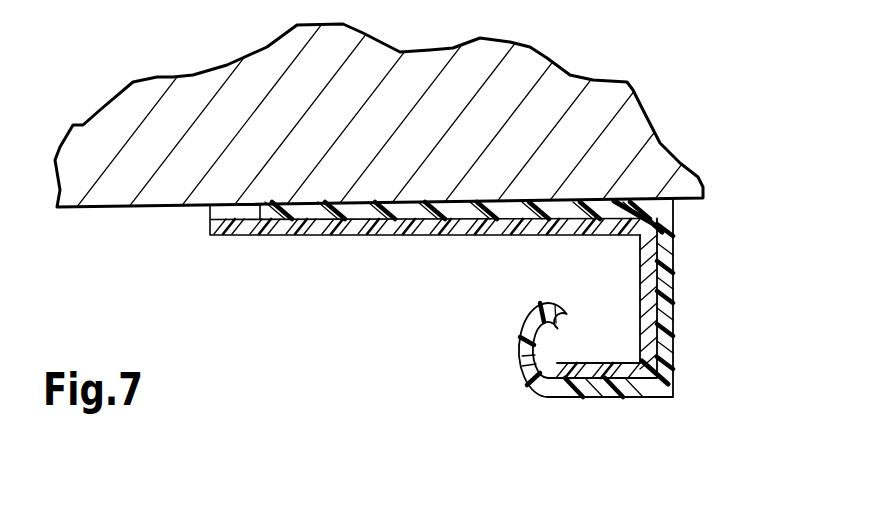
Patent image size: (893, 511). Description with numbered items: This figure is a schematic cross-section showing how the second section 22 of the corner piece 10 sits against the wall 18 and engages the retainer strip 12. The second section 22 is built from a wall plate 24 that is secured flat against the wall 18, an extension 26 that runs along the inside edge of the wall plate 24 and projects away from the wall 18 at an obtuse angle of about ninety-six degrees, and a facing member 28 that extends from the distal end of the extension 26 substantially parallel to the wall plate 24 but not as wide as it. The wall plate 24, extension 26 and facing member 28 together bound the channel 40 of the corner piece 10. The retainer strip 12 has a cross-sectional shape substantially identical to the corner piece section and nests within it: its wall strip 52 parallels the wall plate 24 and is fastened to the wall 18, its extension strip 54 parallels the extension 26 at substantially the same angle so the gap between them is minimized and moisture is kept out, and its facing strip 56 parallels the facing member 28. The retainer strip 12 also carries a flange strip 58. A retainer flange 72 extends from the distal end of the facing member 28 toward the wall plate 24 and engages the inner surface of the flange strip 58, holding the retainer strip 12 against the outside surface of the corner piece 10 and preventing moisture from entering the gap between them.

The corner piece 10 is at (243, 378).
The retainer strip 12 is at (350, 402).
The wall 18 is at (107, 192).
The second section 22 is at (230, 305).
The wall plate 24 is at (230, 234).
The extension 26 is at (648, 265).
The facing member 28 is at (615, 370).
The channel 40 is at (620, 309).
The wall strip 52 is at (398, 206).
The extension strip 54 is at (663, 320).
The facing strip 56 is at (587, 380).
The flange strip 58 is at (520, 372).
The retainer flange 72 is at (521, 334).